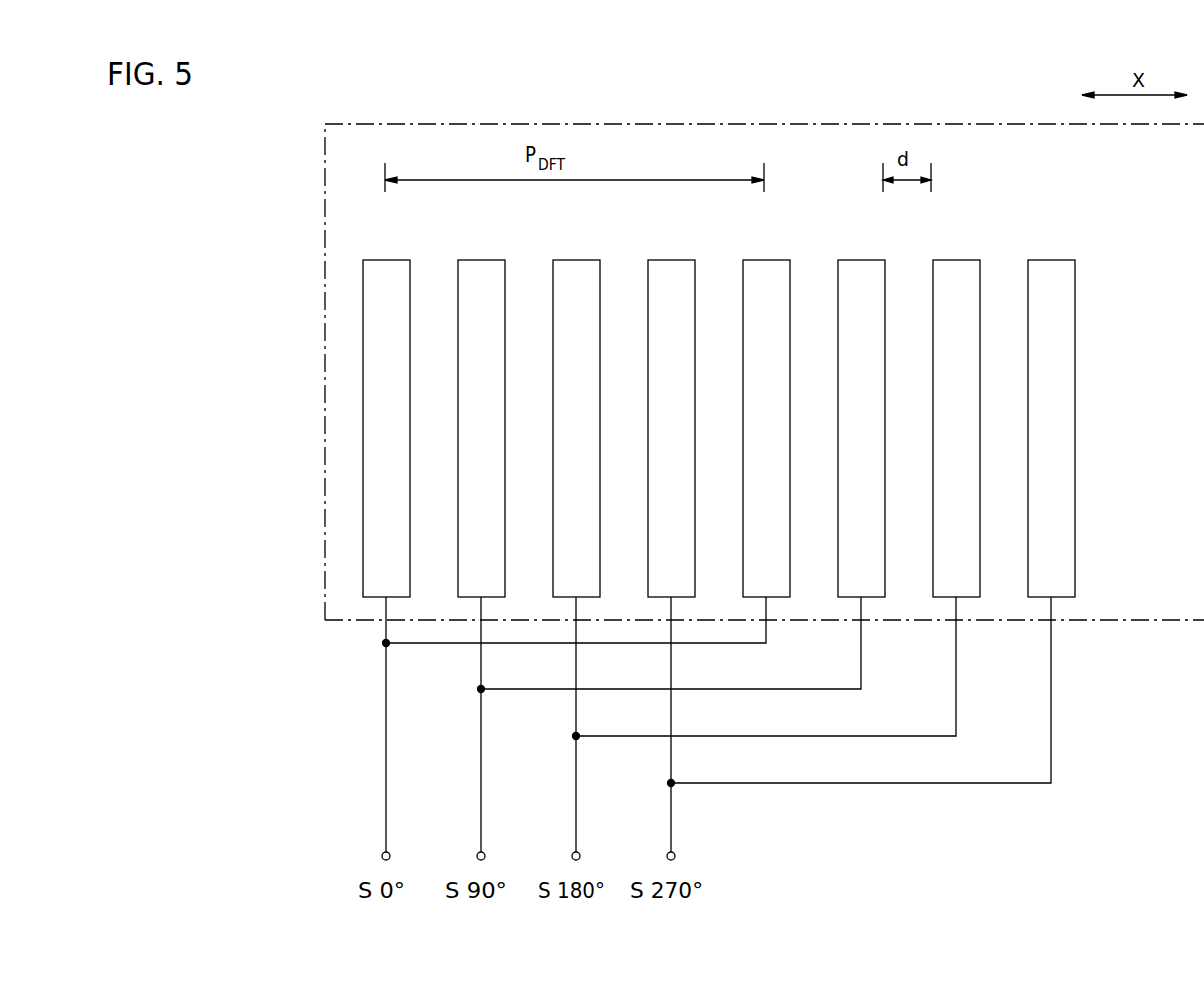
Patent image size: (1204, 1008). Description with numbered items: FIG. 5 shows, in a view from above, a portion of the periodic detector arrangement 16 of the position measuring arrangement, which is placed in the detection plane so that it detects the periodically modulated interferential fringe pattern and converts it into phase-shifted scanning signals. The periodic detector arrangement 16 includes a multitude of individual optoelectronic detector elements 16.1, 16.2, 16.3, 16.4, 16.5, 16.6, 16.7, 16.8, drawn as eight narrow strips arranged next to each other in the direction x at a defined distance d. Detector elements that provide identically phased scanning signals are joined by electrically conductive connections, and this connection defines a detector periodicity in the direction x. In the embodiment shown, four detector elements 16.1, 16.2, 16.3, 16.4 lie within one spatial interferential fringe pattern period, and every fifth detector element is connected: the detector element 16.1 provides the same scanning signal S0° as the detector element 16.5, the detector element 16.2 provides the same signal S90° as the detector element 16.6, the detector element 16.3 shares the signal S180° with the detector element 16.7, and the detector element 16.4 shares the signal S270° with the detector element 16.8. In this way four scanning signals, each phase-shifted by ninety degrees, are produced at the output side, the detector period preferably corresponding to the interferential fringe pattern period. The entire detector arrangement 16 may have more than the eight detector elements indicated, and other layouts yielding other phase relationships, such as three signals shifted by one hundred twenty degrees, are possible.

The periodic detector arrangement 16 is at (1135, 621).
The detector element 16.1 is at (386, 278).
The detector element 16.2 is at (481, 278).
The detector element 16.3 is at (576, 278).
The detector element 16.4 is at (671, 278).
The detector element 16.5 is at (766, 278).
The detector element 16.6 is at (861, 278).
The detector element 16.7 is at (956, 278).
The detector element 16.8 is at (1051, 278).